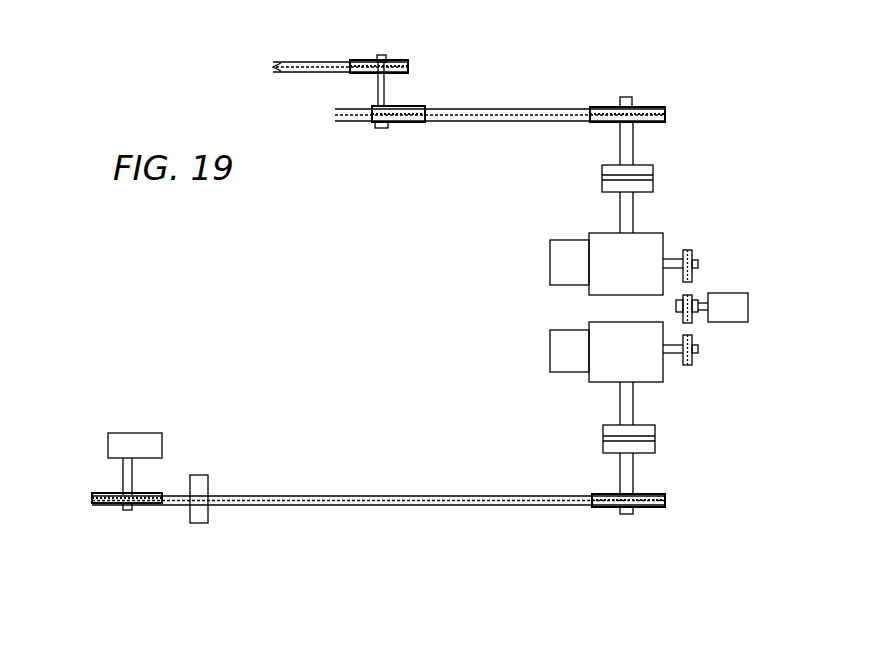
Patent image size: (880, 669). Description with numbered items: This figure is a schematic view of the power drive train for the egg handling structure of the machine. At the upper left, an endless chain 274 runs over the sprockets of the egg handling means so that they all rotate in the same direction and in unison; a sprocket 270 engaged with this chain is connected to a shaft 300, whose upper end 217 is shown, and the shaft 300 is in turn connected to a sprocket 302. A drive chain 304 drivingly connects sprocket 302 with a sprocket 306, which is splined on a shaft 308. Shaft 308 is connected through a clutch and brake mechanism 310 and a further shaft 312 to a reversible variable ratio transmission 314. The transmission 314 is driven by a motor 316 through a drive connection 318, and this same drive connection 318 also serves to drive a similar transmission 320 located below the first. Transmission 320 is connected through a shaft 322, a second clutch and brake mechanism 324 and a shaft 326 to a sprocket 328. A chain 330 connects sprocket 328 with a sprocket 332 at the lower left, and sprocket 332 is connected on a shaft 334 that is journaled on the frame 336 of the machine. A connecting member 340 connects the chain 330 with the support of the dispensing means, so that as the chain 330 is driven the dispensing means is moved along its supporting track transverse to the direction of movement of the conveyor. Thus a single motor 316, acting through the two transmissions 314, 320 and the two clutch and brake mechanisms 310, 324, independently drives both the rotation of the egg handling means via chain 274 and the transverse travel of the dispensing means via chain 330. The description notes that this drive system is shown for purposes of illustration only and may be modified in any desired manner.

The endless chain 274 is at (302, 60).
The shaft end 217 is at (382, 55).
The sprocket 270 is at (405, 62).
The shaft 300 is at (385, 90).
The sprocket 302 is at (357, 123).
The drive chain 304 is at (508, 110).
The sprocket 306 is at (645, 108).
The shaft 308 is at (620, 147).
The clutch and brake mechanism 310 is at (655, 175).
The shaft 312 is at (620, 213).
The reversible variable ratio transmission 314 is at (650, 248).
The motor 316 is at (748, 312).
The drive connection 318 is at (690, 286).
The transmission 320 is at (650, 373).
The shaft 322 is at (633, 410).
The clutch and brake mechanism 324 is at (603, 445).
The shaft 326 is at (633, 480).
The sprocket 328 is at (648, 506).
The chain 330 is at (458, 495).
The sprocket 332 is at (107, 504).
The shaft 334 is at (123, 475).
The frame 336 is at (150, 440).
The connecting member 340 is at (198, 515).